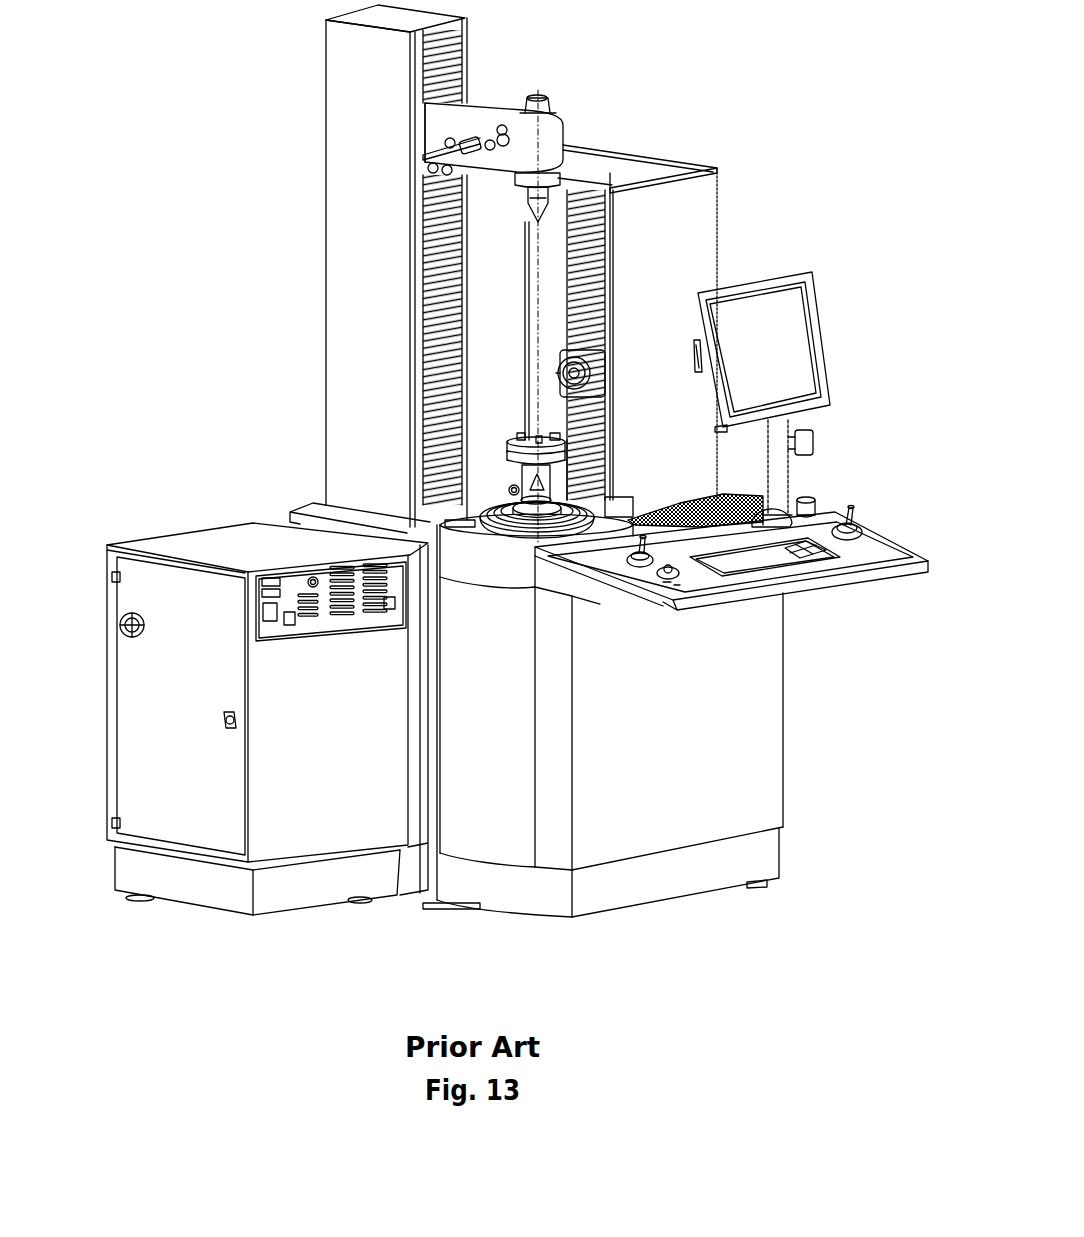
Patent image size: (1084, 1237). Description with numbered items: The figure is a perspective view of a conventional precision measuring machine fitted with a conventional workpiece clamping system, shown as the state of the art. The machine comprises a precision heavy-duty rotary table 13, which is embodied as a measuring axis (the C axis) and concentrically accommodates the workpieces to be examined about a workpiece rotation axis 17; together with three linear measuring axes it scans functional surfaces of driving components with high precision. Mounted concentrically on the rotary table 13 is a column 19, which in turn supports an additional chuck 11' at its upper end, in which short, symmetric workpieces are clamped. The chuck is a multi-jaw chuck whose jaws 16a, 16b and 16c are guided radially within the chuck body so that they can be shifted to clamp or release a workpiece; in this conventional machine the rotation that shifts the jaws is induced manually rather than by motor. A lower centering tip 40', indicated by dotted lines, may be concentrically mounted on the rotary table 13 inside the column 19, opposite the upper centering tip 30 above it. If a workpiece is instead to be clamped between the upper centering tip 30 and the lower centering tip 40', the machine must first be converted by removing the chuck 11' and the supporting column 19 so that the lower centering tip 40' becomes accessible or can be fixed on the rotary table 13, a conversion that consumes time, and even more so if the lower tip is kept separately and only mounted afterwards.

The upper centering tip 30 is at (540, 208).
The workpiece rotation axis 17 is at (540, 318).
The jaw 16b is at (606, 425).
The jaw 16a is at (604, 445).
The lower centering tip 40' is at (750, 490).
The jaw 16c is at (517, 437).
The chuck 11' is at (416, 420).
The column 19 is at (523, 470).
The rotary table 13 is at (480, 515).